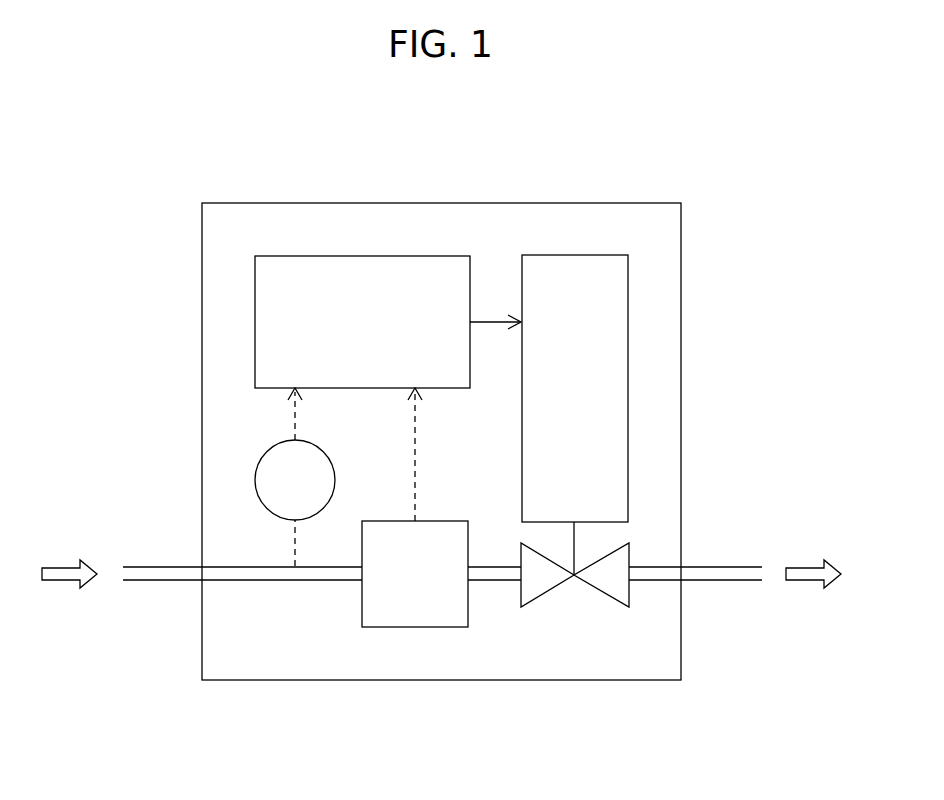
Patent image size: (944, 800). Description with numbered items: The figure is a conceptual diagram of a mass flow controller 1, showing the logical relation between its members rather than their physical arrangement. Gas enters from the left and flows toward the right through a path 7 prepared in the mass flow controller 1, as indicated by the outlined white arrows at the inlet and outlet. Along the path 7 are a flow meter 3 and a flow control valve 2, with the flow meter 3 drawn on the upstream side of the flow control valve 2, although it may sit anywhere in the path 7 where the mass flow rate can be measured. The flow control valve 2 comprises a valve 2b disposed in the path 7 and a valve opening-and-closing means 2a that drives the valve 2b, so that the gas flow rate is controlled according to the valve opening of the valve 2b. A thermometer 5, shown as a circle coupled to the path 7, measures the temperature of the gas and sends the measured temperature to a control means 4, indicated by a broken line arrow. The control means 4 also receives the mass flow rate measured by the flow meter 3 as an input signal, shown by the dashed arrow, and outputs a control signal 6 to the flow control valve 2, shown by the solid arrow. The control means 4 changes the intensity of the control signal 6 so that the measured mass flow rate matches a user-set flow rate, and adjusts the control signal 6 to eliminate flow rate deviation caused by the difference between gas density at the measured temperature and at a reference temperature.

The mass flow controller 1 is at (704, 236).
The flow control valve 2 is at (662, 431).
The valve opening-and-closing means 2a is at (628, 427).
The valve 2b is at (629, 560).
The flow meter 3 is at (415, 627).
The control means 4 is at (255, 322).
The thermometer 5 is at (255, 480).
The control signal 6 is at (497, 322).
The path 7 is at (175, 566).